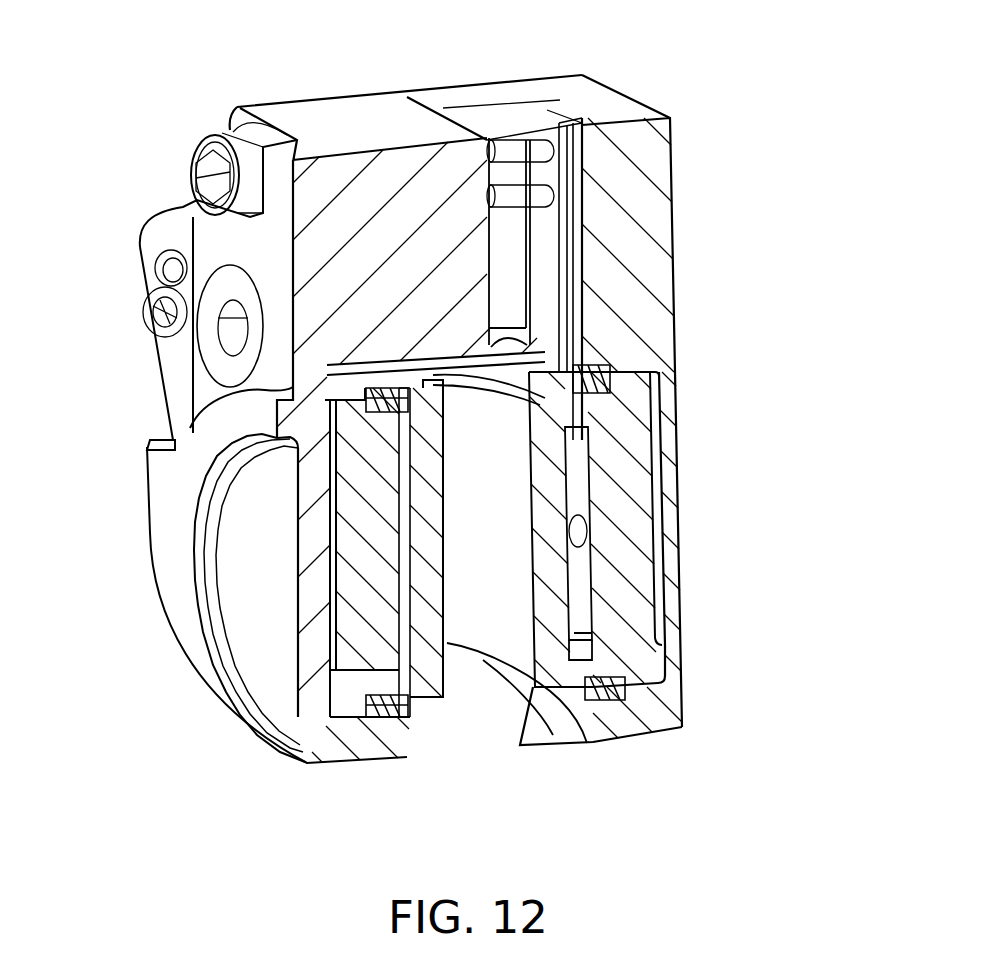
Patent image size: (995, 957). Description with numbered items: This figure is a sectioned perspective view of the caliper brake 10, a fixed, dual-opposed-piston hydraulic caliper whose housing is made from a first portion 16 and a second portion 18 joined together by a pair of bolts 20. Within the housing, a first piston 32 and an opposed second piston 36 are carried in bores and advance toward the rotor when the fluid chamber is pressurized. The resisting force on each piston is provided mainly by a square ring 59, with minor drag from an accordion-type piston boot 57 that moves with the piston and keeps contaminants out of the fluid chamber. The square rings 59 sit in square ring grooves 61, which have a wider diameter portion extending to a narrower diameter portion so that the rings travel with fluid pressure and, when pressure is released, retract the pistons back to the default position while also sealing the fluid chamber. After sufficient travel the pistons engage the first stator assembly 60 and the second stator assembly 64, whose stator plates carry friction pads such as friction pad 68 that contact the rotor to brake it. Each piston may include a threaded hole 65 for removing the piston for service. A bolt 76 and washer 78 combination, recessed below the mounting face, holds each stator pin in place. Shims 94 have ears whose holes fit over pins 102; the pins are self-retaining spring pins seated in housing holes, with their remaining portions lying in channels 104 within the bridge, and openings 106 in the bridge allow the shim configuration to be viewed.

The caliper brake 10 is at (242, 823).
The first portion 16 is at (292, 108).
The second portion 18 is at (587, 97).
The bolts 20 is at (230, 133).
The first piston 32 is at (368, 592).
The second piston 36 is at (627, 525).
The piston boot 57 is at (417, 717).
The square ring 59 is at (377, 717).
The first stator assembly 60 is at (423, 620).
The square ring grooves 61 is at (620, 688).
The second stator assembly 64 is at (560, 650).
The threaded hole 65 is at (575, 548).
The friction pad 68 is at (490, 505).
The bolt 76 is at (152, 318).
The washer 78 is at (165, 300).
The shims 94 is at (567, 253).
The pins 102 is at (513, 147).
The channels 104 is at (507, 268).
The openings 106 is at (488, 123).